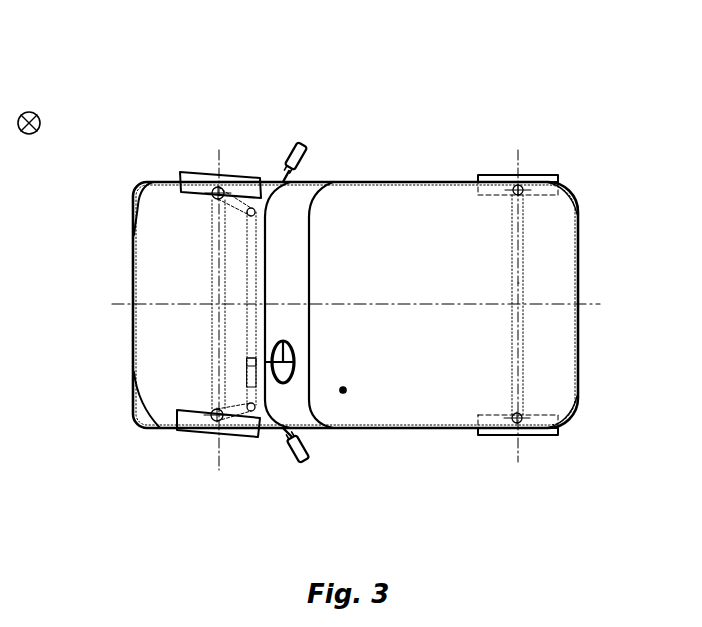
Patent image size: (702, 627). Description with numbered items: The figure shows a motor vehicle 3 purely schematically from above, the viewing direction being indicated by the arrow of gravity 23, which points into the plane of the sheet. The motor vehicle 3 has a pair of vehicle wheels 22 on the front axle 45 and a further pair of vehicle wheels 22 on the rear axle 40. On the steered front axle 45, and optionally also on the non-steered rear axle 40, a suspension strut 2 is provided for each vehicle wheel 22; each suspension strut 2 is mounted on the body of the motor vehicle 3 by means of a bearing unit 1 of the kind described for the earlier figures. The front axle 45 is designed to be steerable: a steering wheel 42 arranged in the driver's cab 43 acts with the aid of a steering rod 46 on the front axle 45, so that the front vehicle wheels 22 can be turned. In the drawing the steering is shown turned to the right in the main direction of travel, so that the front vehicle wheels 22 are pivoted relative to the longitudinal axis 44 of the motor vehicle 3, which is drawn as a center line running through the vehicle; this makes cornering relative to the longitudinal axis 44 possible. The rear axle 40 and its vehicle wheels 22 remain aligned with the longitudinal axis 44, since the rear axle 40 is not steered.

The motor vehicle 3 is at (440, 96).
The bearing unit 1 is at (367, 309).
The suspension strut 2 is at (222, 180).
The vehicle wheel 22 is at (190, 172).
The arrow of gravity 23 is at (32, 113).
The rear axle 40 is at (520, 283).
The steering wheel 42 is at (281, 340).
The driver's cab 43 is at (343, 392).
The longitudinal axis 44 is at (398, 305).
The front axle 45 is at (213, 258).
The steering rod 46 is at (245, 283).